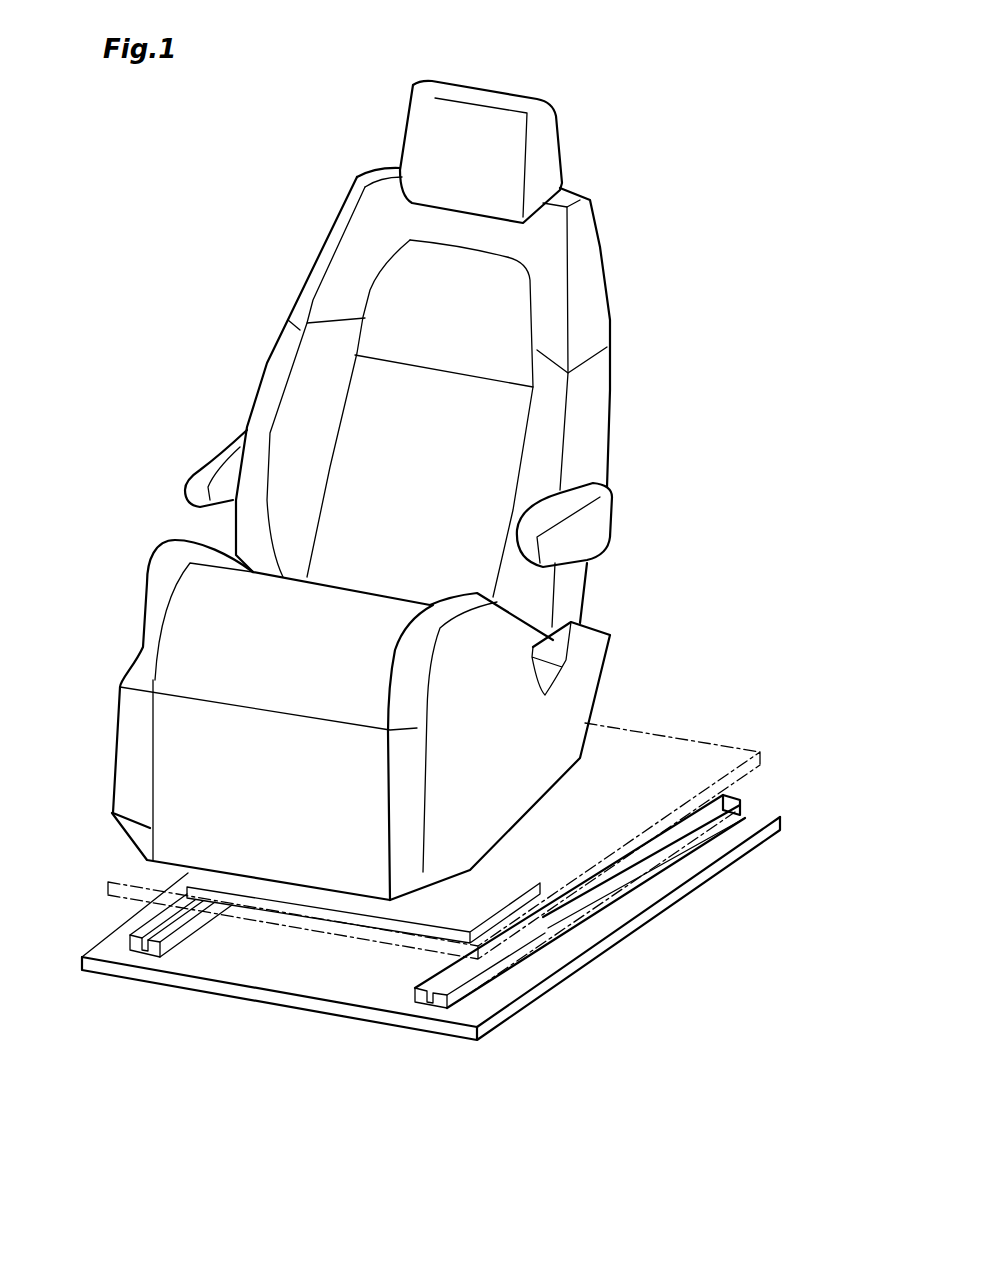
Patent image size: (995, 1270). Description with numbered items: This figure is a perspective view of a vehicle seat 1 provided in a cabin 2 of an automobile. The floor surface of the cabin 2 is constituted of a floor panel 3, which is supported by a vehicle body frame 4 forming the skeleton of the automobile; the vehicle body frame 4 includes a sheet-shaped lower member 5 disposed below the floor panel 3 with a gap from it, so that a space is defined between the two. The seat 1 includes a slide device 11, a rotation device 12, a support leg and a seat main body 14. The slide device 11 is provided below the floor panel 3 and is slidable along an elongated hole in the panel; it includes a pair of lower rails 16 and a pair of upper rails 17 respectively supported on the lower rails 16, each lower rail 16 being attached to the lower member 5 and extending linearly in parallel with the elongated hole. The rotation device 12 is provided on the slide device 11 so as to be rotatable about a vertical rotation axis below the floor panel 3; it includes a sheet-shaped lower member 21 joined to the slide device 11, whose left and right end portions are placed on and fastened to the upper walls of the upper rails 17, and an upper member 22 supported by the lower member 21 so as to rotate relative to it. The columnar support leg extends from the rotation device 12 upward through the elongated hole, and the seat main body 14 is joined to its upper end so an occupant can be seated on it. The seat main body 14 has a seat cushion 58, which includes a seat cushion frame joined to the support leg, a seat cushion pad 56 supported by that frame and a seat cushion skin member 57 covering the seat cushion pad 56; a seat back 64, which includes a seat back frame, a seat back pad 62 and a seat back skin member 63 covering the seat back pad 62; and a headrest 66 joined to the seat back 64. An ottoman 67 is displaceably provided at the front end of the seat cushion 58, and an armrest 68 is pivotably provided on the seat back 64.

The vehicle seat 1 is at (355, 172).
The cabin 2 is at (193, 231).
The floor panel 3 is at (120, 873).
The vehicle body frame 4 is at (408, 1038).
The lower member 5 is at (290, 1005).
The slide device 11 is at (183, 945).
The rotation device 12 is at (473, 983).
The seat main body 14 is at (265, 362).
The lower rail 16 is at (490, 897).
The upper rail 17 is at (500, 875).
The lower member 21 is at (598, 897).
The upper member 22 is at (387, 913).
The seat cushion pad 56 is at (183, 625).
The seat cushion skin member 57 is at (193, 565).
The seat cushion 58 is at (195, 605).
The seat back pad 62 is at (555, 302).
The seat back skin member 63 is at (557, 338).
The seat back 64 is at (605, 243).
The headrest 66 is at (483, 115).
The ottoman 67 is at (163, 748).
The armrest 68 is at (195, 477).